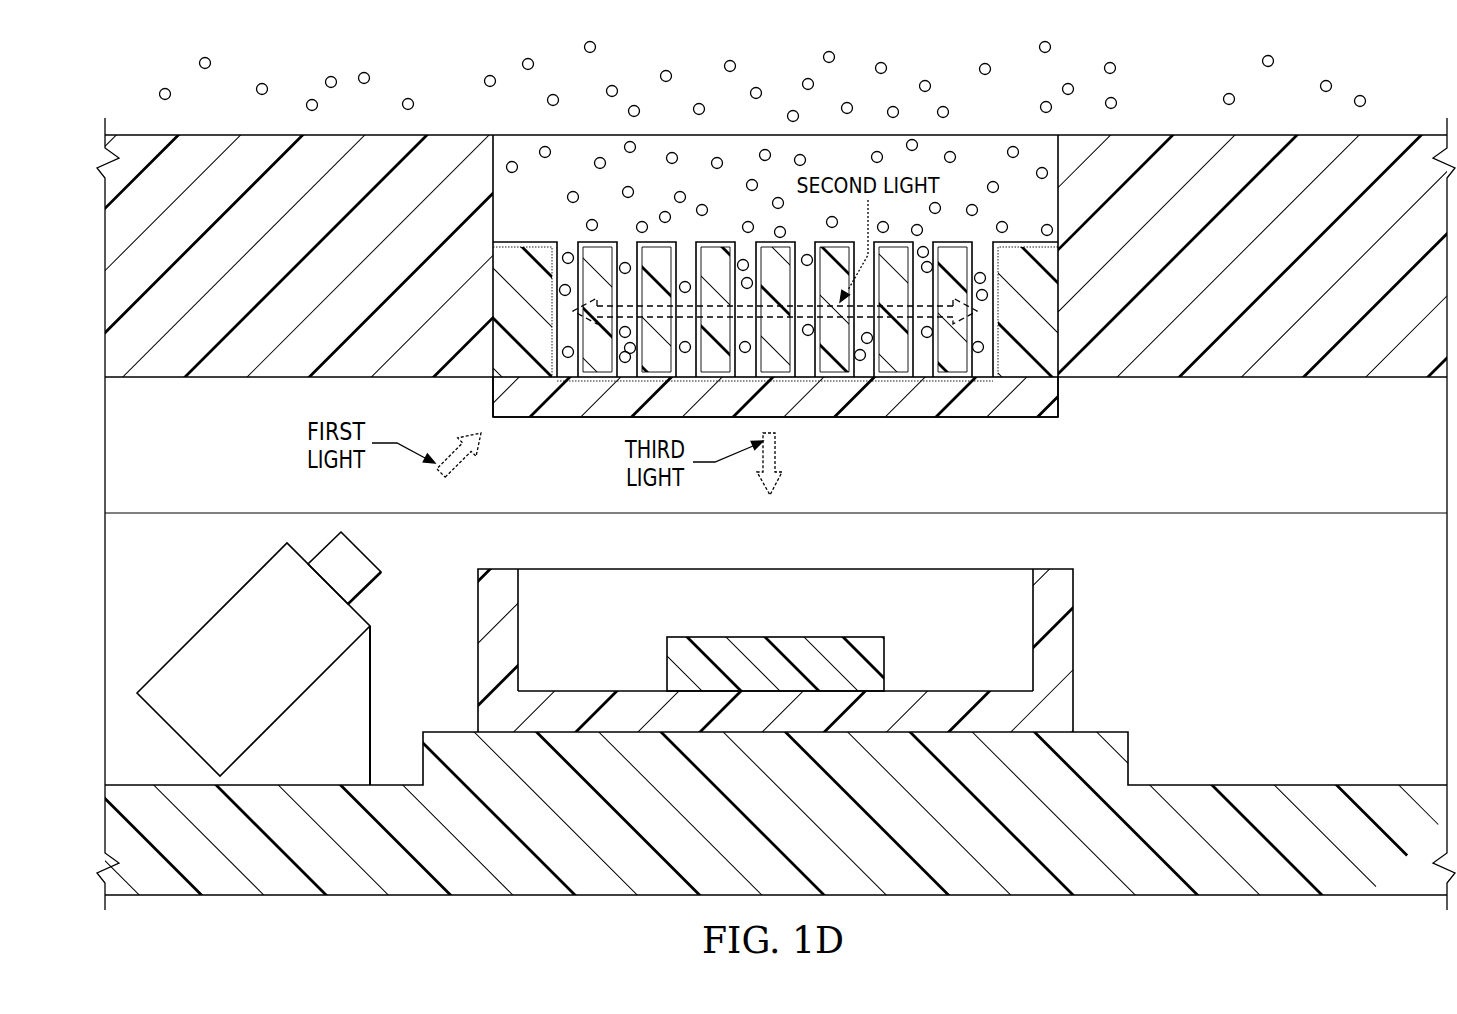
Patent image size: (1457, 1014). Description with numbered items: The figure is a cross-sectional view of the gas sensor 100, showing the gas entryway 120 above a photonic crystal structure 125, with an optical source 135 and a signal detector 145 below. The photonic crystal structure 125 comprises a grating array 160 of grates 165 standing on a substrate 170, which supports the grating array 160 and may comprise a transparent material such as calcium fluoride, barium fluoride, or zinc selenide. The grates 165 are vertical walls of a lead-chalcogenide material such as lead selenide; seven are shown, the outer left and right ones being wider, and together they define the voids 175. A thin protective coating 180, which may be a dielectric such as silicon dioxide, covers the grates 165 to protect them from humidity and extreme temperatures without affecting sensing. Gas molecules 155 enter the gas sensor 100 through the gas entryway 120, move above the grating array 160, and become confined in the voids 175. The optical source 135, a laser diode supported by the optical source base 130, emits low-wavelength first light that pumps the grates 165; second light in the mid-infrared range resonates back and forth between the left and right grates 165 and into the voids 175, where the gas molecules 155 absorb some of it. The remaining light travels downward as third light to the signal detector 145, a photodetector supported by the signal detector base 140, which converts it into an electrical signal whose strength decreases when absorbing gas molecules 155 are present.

The gas sensor 100 is at (464, 100).
The gas entryway 120 is at (982, 146).
The photonic crystal structure 125 is at (1004, 441).
The optical source base 130 is at (362, 680).
The optical source 135 is at (212, 617).
The signal detector base 140 is at (1068, 645).
The signal detector 145 is at (875, 650).
The gas molecules 155 is at (1118, 102).
The grating array 160 is at (472, 292).
The grates 165 is at (502, 353).
The substrate 170 is at (915, 402).
The voids 175 is at (805, 360).
The protective coating 180 is at (539, 243).